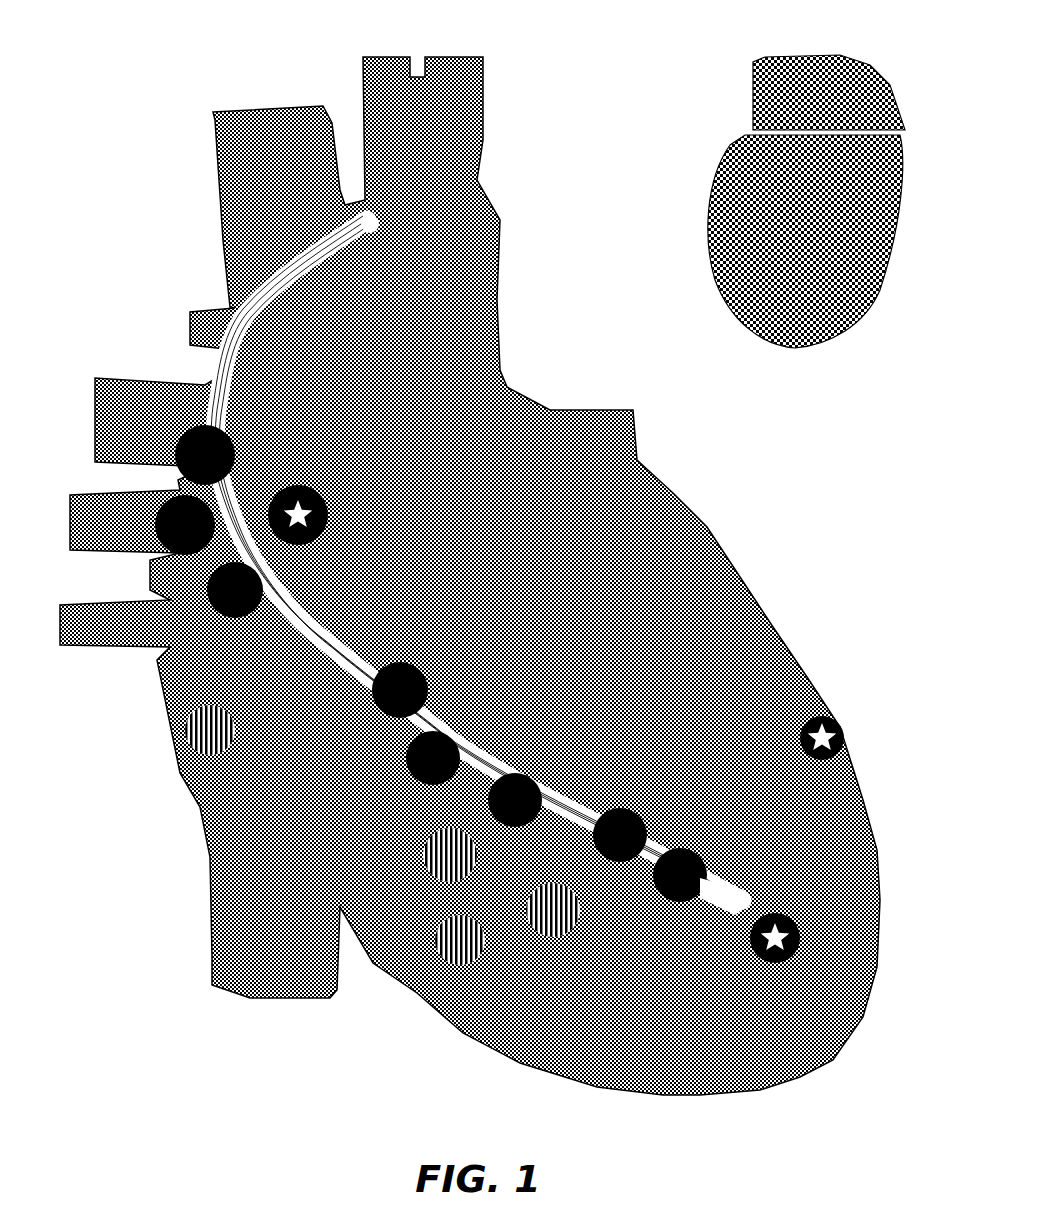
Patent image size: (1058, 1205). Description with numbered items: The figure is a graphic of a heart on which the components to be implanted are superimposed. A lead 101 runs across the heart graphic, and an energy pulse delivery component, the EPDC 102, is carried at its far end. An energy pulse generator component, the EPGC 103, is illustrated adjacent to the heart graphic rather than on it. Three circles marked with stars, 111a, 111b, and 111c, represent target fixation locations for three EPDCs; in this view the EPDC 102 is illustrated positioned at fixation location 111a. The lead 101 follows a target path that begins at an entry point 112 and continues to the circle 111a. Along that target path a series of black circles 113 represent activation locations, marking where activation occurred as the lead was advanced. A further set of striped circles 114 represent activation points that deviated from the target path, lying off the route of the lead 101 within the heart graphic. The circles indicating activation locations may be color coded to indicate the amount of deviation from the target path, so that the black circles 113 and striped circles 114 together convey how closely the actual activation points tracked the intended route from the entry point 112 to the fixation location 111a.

The lead 101 is at (270, 292).
The EPDC 102 is at (747, 900).
The EPGC 103 is at (722, 165).
The fixation location 111a is at (793, 933).
The fixation location 111b is at (840, 730).
The fixation location 111c is at (315, 500).
The entry point 112 is at (375, 232).
The circles (black) 113 is at (165, 540).
The circles (striped) 114 is at (190, 740).